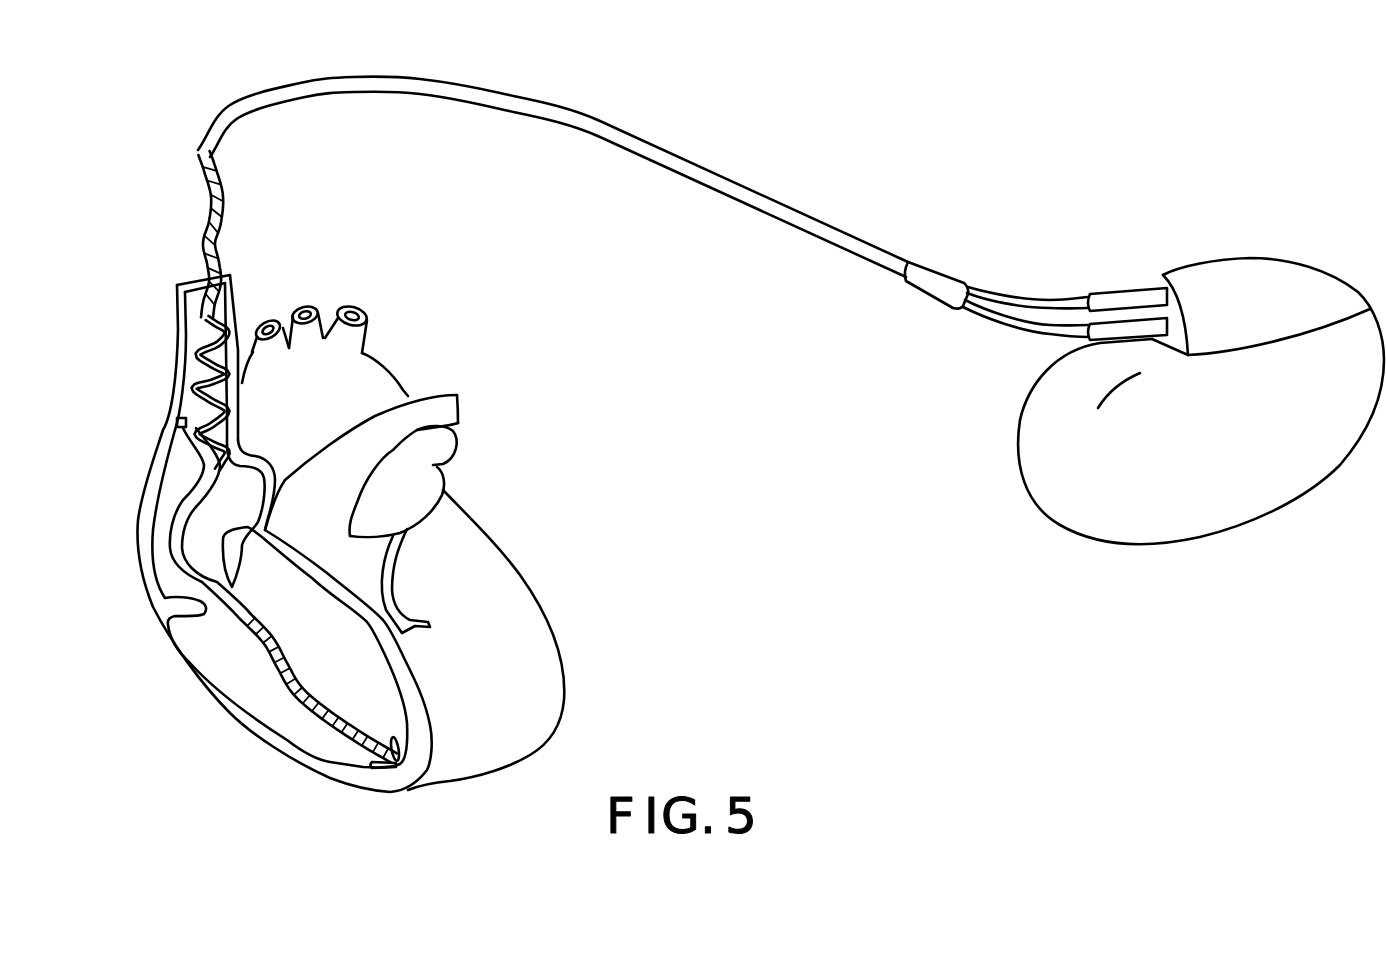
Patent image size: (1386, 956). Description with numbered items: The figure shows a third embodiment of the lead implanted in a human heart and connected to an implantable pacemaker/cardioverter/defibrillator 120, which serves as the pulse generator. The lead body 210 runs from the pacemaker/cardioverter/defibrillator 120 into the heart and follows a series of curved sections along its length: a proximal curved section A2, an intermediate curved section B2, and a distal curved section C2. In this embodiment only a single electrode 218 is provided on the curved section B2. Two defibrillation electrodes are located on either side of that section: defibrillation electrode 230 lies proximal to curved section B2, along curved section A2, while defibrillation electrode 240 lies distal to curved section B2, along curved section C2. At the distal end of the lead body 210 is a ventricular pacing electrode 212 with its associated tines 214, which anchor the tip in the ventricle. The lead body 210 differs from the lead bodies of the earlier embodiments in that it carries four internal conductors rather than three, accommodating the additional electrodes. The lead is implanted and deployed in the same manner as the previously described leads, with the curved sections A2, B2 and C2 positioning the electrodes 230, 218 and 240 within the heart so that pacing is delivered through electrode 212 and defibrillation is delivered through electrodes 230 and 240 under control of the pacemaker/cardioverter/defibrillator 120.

The implantable pacemaker/cardioverter/defibrillator 120 is at (1275, 485).
The lead body 210 is at (193, 570).
The ventricular pacing electrode 212 is at (395, 768).
The tines 214 is at (380, 770).
The electrode 218 is at (184, 423).
The defibrillation electrode 230 is at (200, 311).
The defibrillation electrode 240 is at (323, 715).
The curved section A2 is at (170, 259).
The curved section B2 is at (160, 394).
The curved section C2 is at (262, 697).